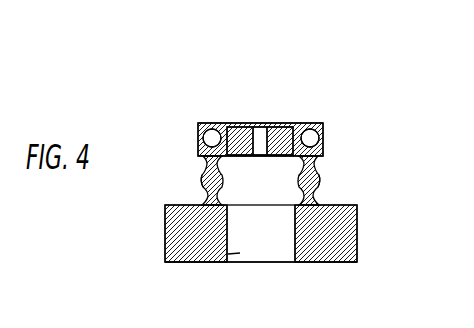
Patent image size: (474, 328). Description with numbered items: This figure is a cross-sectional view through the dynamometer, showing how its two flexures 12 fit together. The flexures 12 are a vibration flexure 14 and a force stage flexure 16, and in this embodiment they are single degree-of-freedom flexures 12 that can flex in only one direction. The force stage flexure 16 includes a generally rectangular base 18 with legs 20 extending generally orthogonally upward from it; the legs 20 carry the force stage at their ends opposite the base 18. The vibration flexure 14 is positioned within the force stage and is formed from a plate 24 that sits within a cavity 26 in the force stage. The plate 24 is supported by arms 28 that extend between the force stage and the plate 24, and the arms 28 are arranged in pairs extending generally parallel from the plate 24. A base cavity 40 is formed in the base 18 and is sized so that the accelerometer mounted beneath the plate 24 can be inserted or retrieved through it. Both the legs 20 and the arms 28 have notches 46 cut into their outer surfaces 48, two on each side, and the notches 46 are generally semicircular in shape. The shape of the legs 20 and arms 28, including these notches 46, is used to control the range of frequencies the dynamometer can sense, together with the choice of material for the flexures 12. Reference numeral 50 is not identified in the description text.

The flexures 12 is at (366, 112).
The vibration flexure 14 is at (293, 115).
The force stage flexure 16 is at (350, 162).
The base 18 is at (358, 236).
The legs 20 is at (166, 240).
The plate 24 is at (231, 122).
The cavity 26 is at (260, 143).
The arms 28 is at (238, 122).
The base cavity 40 is at (210, 263).
The notches 46 is at (208, 161).
The outer surfaces 48 is at (200, 182).
The retaining ring 50 is at (308, 122).